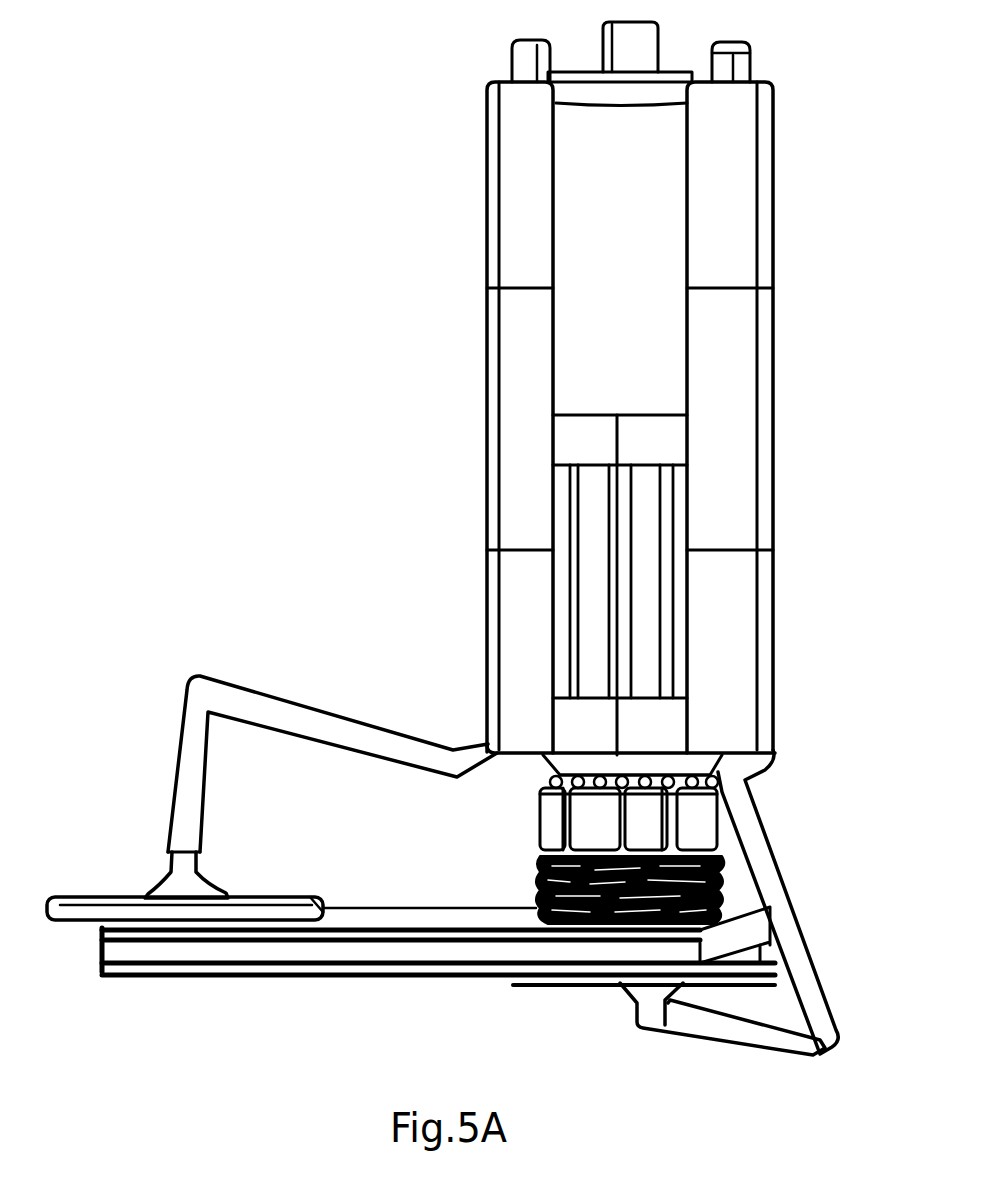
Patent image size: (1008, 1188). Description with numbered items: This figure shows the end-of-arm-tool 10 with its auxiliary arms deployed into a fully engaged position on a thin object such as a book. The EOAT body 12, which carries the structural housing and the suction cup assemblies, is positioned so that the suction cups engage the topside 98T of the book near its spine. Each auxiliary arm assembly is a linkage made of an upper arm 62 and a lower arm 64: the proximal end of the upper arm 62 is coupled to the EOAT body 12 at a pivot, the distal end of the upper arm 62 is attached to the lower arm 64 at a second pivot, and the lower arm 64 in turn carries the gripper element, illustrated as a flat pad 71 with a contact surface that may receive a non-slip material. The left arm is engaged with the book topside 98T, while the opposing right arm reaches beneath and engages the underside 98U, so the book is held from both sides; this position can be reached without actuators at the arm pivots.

The end-of-arm-tool 10 is at (288, 423).
The EOAT body 12 is at (631, 473).
The upper arm 62 is at (303, 722).
The lower arm 64 is at (188, 795).
The flat pad 71 is at (110, 898).
The topside 98T is at (455, 918).
The underside 98U is at (222, 972).